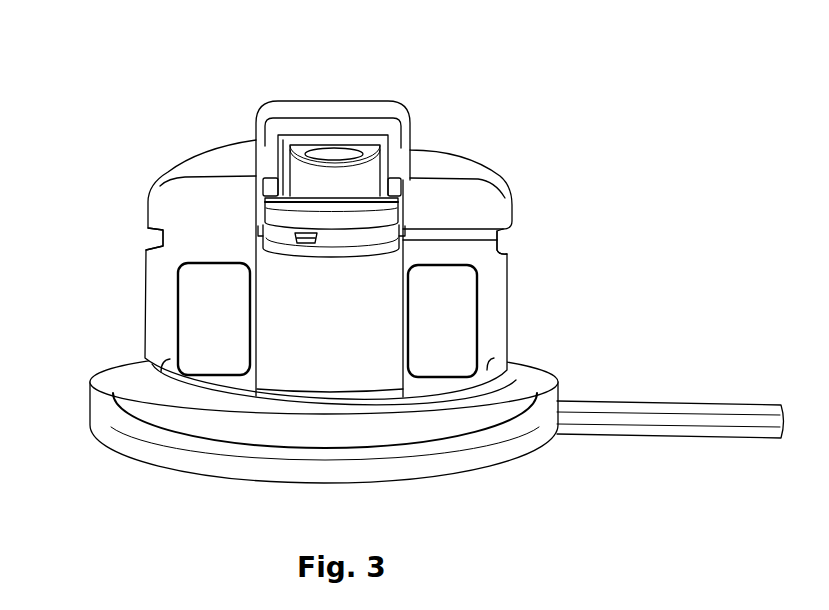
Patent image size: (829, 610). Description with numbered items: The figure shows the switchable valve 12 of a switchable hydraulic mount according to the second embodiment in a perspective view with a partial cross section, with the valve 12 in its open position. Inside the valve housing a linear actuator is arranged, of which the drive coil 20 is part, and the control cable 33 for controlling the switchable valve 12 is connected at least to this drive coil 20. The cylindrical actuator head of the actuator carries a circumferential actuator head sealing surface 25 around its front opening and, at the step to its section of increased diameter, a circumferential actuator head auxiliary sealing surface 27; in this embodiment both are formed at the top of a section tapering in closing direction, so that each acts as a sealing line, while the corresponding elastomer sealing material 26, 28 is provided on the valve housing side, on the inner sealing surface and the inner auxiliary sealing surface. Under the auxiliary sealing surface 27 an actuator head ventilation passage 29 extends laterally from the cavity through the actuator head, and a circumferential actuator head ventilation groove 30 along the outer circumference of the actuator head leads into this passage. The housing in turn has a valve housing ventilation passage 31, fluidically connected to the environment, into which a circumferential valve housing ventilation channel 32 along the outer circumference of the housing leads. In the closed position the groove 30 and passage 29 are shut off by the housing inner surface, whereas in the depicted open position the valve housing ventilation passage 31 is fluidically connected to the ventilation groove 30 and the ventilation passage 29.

The switchable valve 12 is at (138, 135).
The drive coil 20 is at (441, 352).
The actuator head sealing surface 25 is at (376, 152).
The elastomer sealing material 26 is at (348, 138).
The actuator head auxiliary sealing surface 27 is at (293, 196).
The elastomer sealing material 28 is at (392, 180).
The actuator head ventilation passage 29 is at (303, 244).
The actuator head ventilation groove 30 is at (263, 226).
The valve housing ventilation passage 31 is at (442, 242).
The valve housing ventilation channel 32 is at (502, 240).
The control cable 33 is at (672, 420).